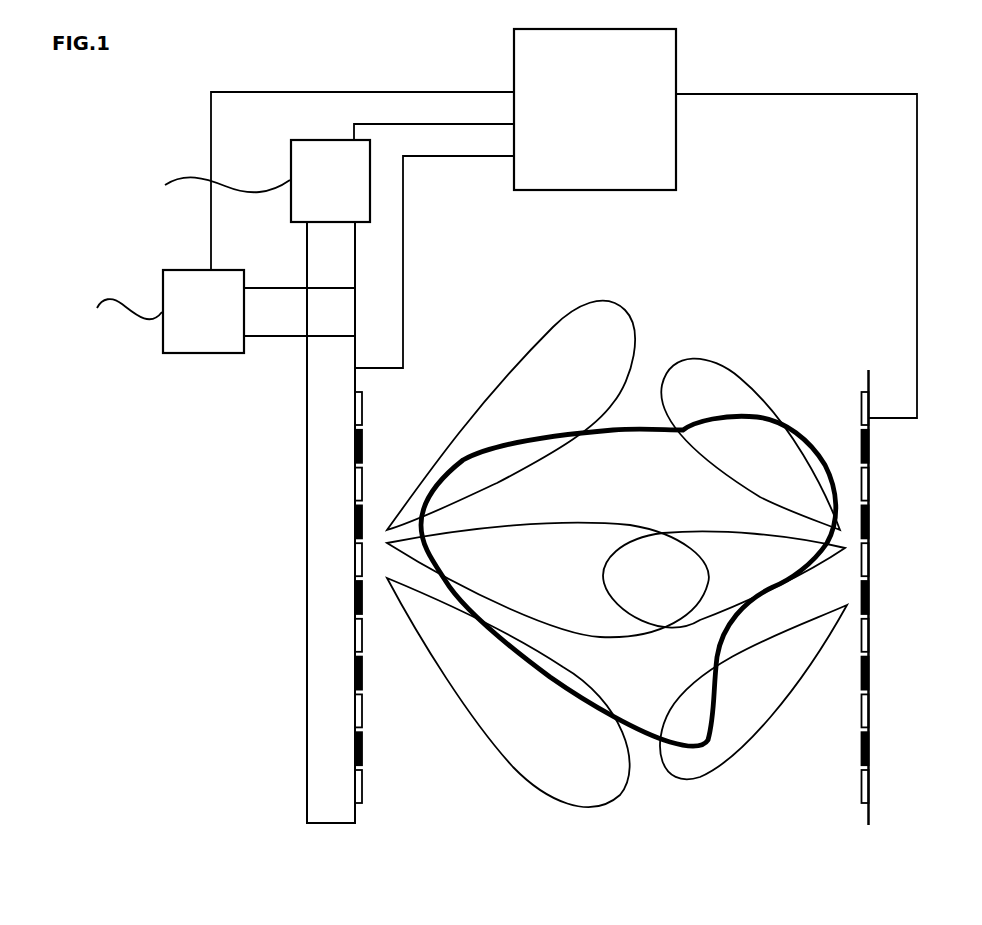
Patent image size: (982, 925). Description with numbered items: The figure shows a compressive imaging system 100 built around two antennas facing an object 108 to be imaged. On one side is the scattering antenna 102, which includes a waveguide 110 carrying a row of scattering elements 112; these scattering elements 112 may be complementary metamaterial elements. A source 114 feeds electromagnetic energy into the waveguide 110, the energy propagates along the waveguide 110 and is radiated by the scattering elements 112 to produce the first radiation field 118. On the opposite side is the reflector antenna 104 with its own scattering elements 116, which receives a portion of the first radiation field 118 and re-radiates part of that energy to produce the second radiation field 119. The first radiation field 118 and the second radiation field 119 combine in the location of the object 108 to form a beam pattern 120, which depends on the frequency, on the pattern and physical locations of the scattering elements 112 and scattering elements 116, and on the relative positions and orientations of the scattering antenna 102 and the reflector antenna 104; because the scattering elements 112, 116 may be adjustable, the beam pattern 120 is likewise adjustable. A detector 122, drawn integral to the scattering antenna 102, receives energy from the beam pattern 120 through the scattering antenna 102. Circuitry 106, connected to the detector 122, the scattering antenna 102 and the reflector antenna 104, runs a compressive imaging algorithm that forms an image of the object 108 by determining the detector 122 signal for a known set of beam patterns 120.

The ultrasonic imaging system 100 is at (148, 749).
The scattering antenna 102 is at (308, 547).
The reflector antenna 104 is at (869, 812).
The circuitry 106 is at (564, 223).
The object 108 is at (628, 581).
The waveguide 110 is at (308, 427).
The scattering elements 112 is at (360, 748).
The source 114 is at (183, 311).
The scattering elements 116 is at (862, 750).
The first radiation field 118 is at (545, 352).
The second radiation field 119 is at (705, 388).
The beam pattern 120 is at (515, 767).
The detector 122 is at (205, 181).